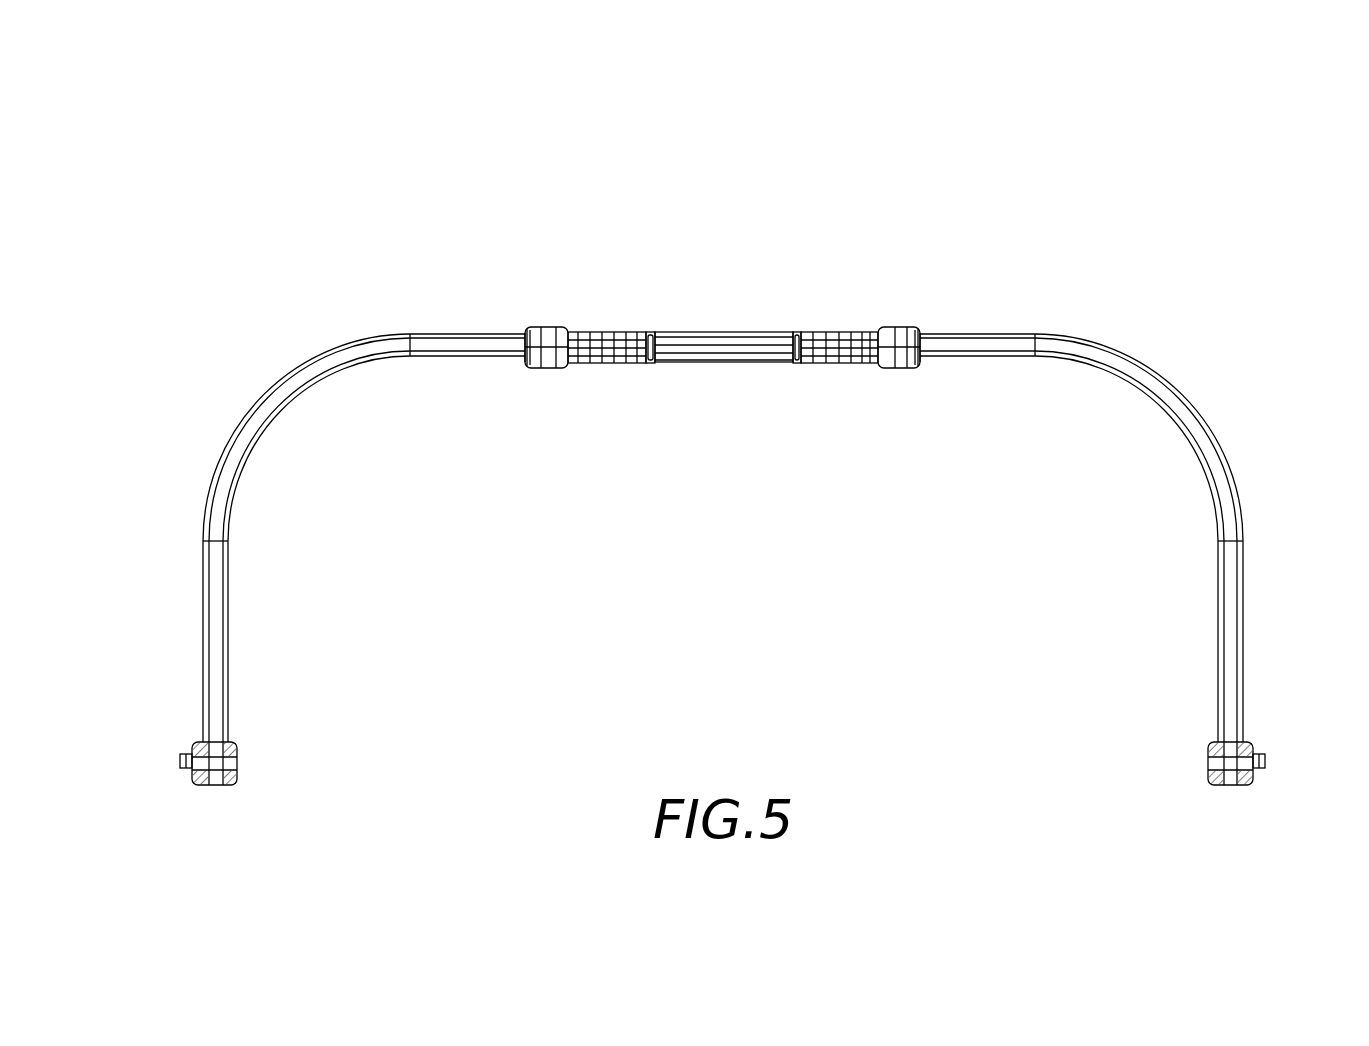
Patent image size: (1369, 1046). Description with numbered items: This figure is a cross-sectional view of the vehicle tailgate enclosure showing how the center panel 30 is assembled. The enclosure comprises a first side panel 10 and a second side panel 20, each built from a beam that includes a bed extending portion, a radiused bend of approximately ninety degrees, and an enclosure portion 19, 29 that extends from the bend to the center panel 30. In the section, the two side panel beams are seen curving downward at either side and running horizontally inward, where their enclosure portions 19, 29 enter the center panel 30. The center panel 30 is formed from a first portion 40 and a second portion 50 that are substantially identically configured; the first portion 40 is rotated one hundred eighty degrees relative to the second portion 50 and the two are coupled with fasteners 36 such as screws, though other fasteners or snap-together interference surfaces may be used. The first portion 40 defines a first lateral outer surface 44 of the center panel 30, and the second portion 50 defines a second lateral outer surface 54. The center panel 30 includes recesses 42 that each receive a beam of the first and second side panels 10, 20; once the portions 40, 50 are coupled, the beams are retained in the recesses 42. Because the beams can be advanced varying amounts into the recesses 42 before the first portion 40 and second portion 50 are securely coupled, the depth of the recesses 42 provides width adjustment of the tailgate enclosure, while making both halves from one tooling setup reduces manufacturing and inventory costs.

The first side panel 10 is at (1260, 365).
The enclosure portion 19 is at (971, 350).
The second side panel 20 is at (147, 484).
The enclosure portion 29 is at (450, 345).
The center panel 30 is at (668, 250).
The fasteners 36 is at (797, 333).
The first portion 40 is at (708, 331).
The recesses 42 is at (541, 347).
The first lateral outer surface 44 is at (522, 332).
The second portion 50 is at (738, 364).
The second lateral outer surface 54 is at (920, 338).